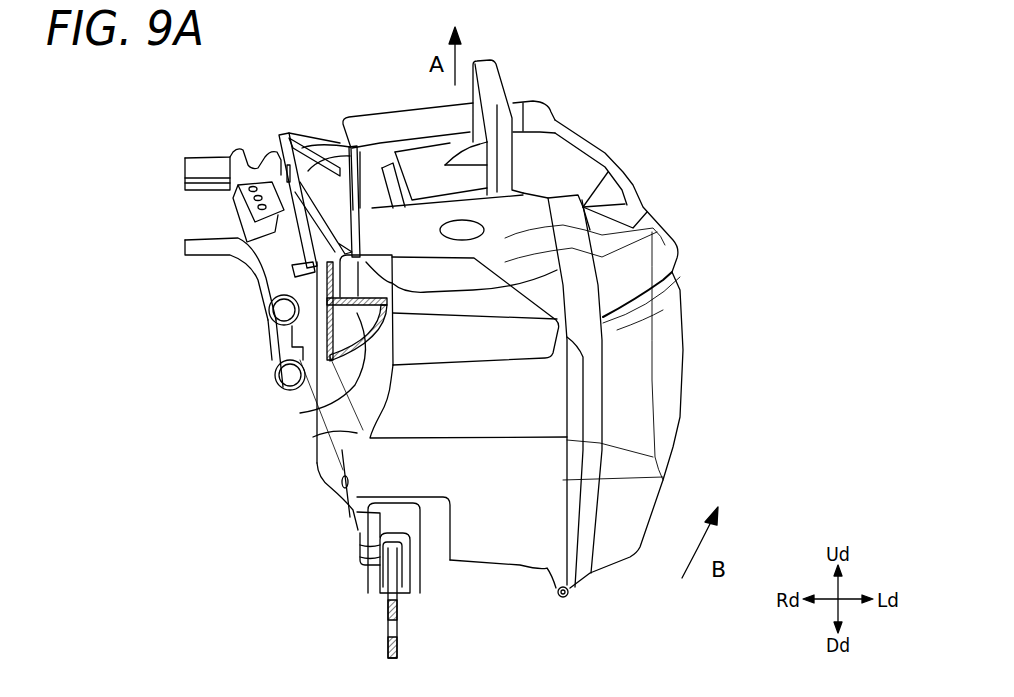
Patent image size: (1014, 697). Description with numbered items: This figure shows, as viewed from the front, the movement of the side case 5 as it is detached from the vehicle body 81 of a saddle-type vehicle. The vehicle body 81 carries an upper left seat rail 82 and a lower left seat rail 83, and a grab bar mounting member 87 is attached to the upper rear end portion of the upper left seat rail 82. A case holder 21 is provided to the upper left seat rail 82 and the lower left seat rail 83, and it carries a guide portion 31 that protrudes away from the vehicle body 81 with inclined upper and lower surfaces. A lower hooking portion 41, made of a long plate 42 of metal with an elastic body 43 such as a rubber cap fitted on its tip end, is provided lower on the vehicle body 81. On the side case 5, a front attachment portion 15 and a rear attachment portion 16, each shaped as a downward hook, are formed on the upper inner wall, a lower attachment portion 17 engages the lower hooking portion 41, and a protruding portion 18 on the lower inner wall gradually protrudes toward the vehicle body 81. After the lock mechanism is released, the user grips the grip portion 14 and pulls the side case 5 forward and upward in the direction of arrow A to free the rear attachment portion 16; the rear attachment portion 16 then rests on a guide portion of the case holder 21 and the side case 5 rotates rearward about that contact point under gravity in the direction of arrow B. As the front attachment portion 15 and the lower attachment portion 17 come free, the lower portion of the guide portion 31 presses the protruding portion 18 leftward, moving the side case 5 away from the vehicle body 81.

The side case 5 is at (630, 168).
The grip portion 14 is at (490, 80).
The front attachment portion 15 is at (545, 275).
The rear attachment portion 16 is at (333, 150).
The lower attachment portion 17 is at (383, 527).
The protruding portion 18 is at (315, 437).
The case holder 21 is at (280, 131).
The guide portion 31 is at (325, 365).
The lower hooking portion 41 is at (395, 580).
The plate 42 is at (392, 613).
The elastic body 43 is at (380, 582).
The vehicle body 81 is at (237, 306).
The upper left seat rail 82 is at (263, 260).
The lower left seat rail 83 is at (273, 335).
The grab bar mounting member 87 is at (240, 209).